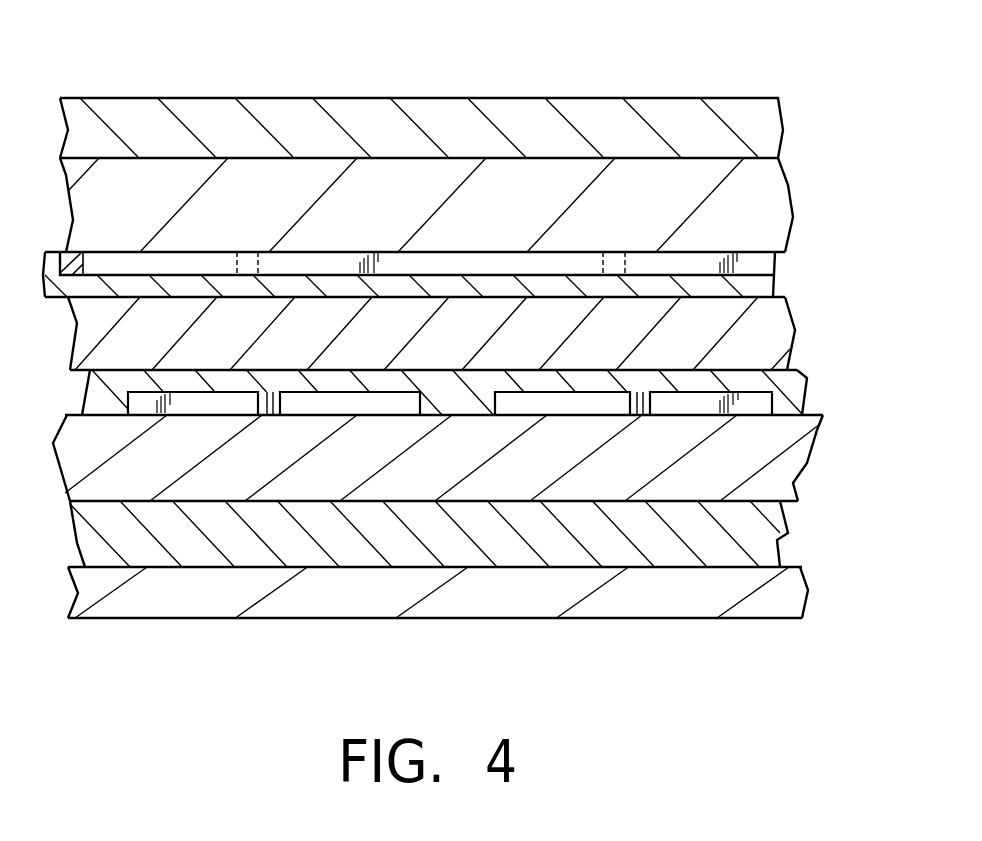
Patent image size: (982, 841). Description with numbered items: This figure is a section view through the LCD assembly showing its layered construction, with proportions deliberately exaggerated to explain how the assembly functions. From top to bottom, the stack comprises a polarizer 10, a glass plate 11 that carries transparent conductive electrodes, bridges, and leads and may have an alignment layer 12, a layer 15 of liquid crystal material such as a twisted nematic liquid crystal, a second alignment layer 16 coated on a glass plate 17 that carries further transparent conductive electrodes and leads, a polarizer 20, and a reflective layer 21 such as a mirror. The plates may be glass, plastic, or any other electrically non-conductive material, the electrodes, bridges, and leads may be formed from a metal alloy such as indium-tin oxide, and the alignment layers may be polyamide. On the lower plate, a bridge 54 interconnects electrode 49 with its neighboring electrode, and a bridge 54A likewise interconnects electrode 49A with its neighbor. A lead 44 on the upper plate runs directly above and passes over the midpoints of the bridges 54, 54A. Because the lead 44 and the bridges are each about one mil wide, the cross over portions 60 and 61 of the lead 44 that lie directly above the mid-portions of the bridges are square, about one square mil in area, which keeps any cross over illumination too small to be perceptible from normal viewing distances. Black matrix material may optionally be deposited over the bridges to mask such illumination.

The polarizer 10 is at (457, 309).
The glass plate 11 is at (281, 207).
The alignment layer 12 is at (450, 197).
The layer of liquid crystal material 15 is at (464, 346).
The alignment layer 16 is at (820, 372).
The glass plate 17 is at (263, 478).
The polarizer 20 is at (802, 545).
The reflective layer 21 is at (204, 603).
The lead 44 is at (100, 262).
The electrode 49 is at (700, 405).
The electrode 49A is at (392, 405).
The bridge 54 is at (625, 405).
The bridge 54A is at (258, 404).
The cross over portion 60 is at (258, 258).
The cross over portion 61 is at (625, 258).